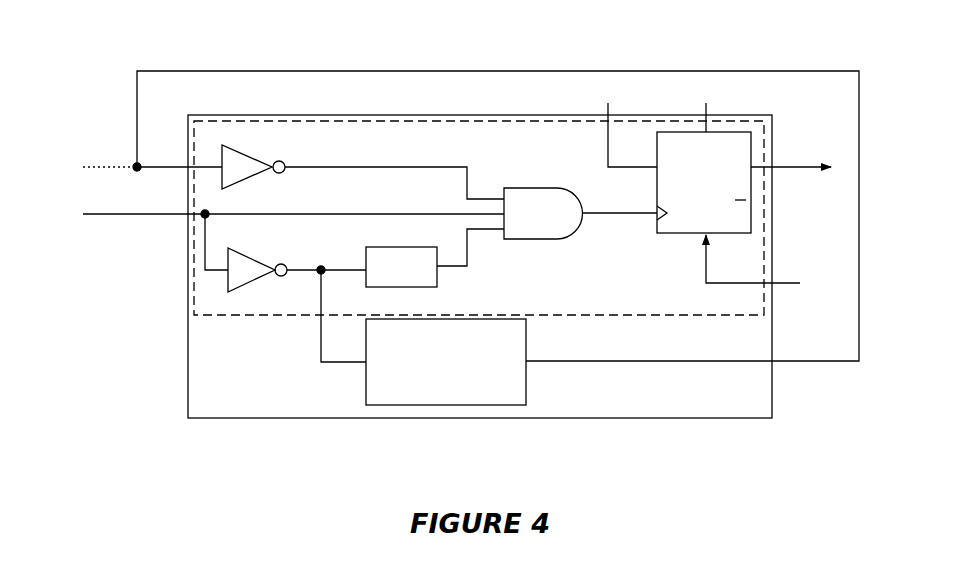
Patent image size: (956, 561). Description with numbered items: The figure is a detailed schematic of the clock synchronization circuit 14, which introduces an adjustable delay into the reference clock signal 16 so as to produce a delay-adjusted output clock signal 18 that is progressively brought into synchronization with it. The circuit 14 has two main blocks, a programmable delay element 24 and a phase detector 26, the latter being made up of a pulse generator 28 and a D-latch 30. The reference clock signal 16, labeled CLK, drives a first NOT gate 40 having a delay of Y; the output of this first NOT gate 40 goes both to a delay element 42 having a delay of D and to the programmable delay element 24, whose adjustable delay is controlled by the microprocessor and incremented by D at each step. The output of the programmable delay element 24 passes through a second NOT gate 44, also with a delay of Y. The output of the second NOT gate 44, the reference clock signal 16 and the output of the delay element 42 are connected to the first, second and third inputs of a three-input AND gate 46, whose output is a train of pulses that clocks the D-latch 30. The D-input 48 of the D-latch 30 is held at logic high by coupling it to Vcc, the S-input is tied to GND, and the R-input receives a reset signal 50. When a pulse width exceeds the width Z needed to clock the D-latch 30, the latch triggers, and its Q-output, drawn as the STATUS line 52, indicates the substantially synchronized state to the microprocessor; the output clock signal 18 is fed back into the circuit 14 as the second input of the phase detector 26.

The clock synchronization circuit 14 is at (383, 111).
The reference clock signal 16 is at (122, 220).
The output clock signal 18 is at (818, 363).
The programmable delay element 24 is at (520, 393).
The phase detector 26 is at (638, 320).
The pulse generator 28 is at (579, 293).
The D-latch 30 is at (686, 227).
The first NOT gate 40 is at (250, 279).
The delay element 42 is at (428, 283).
The second NOT gate 44 is at (262, 161).
The three-input AND gate 46 is at (562, 229).
The D-input 48 is at (642, 162).
The reset signal 50 is at (782, 282).
The status output 52 is at (797, 170).